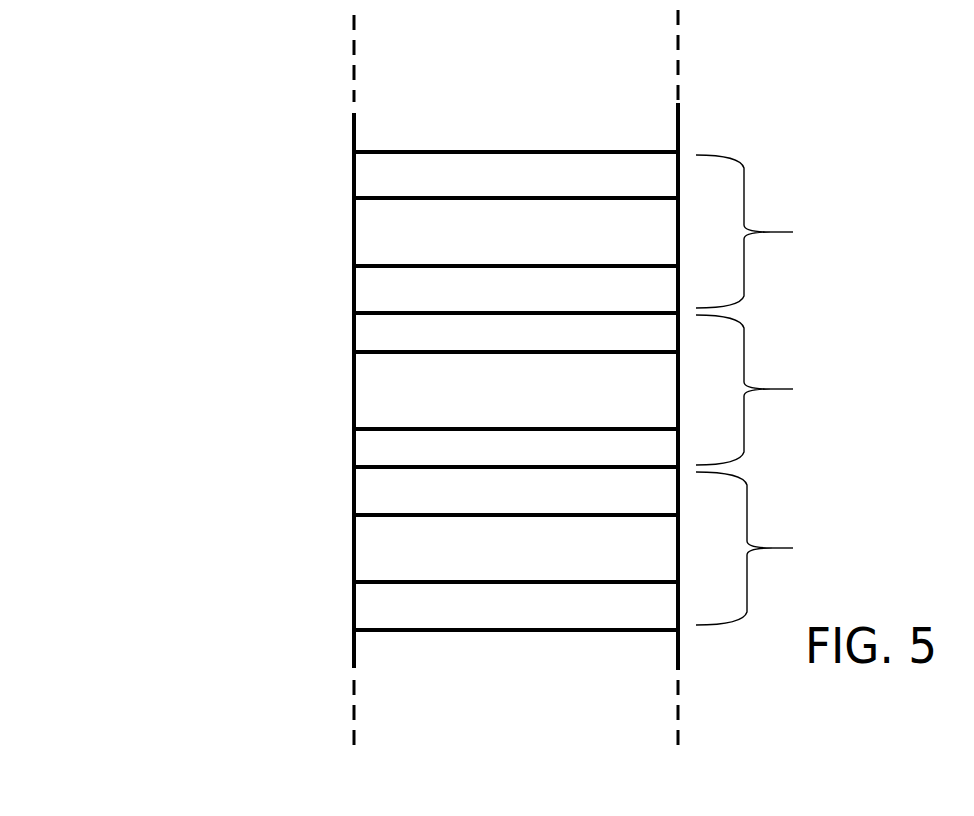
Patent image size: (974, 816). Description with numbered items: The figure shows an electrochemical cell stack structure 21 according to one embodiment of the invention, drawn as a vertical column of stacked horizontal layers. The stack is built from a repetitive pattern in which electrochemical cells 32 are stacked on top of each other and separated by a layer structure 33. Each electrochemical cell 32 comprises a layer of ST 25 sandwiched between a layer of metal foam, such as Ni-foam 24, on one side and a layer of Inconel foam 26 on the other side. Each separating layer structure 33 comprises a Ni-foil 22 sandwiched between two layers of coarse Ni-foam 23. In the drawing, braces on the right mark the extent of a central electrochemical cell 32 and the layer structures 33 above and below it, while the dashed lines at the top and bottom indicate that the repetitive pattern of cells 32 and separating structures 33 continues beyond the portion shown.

The layer stack / optical element 21 is at (893, 77).
The Ni-foil 22 is at (378, 237).
The coarse Ni-foam 23 is at (380, 181).
The Ni-foam 24 is at (372, 343).
The ST layer 25 is at (377, 403).
The Inconel foam 26 is at (372, 458).
The electrochemical cell 32 is at (352, 93).
The layer structure 33 is at (770, 390).